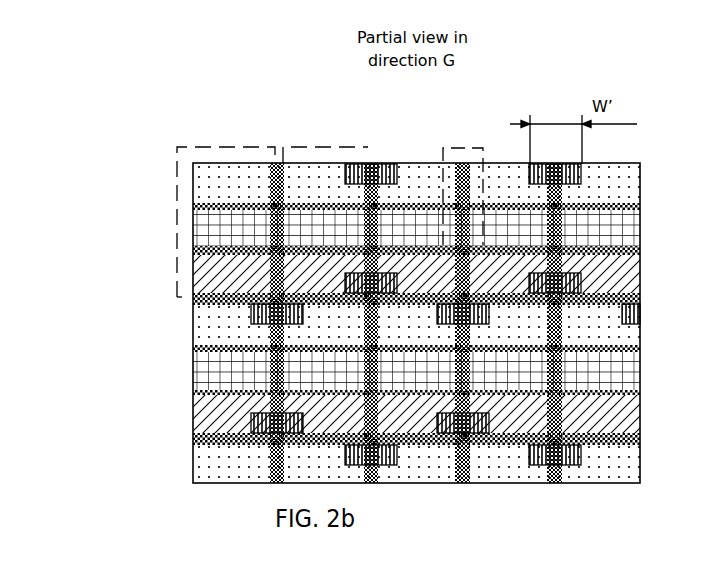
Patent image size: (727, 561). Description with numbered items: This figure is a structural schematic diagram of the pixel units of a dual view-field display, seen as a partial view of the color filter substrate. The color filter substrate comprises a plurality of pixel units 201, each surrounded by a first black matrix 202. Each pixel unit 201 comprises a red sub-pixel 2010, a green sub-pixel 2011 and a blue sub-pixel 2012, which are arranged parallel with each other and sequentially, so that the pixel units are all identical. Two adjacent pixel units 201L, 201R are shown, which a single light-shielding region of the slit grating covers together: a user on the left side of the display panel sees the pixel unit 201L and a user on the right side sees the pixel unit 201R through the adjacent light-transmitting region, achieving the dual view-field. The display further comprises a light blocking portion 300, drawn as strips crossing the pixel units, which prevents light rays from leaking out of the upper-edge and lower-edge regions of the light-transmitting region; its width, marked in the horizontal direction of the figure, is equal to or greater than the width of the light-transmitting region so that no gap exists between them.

The pixel unit 201 is at (92, 172).
The red sub-pixel 2010 is at (193, 188).
The green sub-pixel 2011 is at (193, 240).
The blue sub-pixel 2012 is at (193, 283).
The left pixel unit 201L is at (227, 153).
The right pixel unit 201R is at (318, 150).
The light blocking portion 300 is at (373, 164).
The first black matrix 202 is at (463, 148).